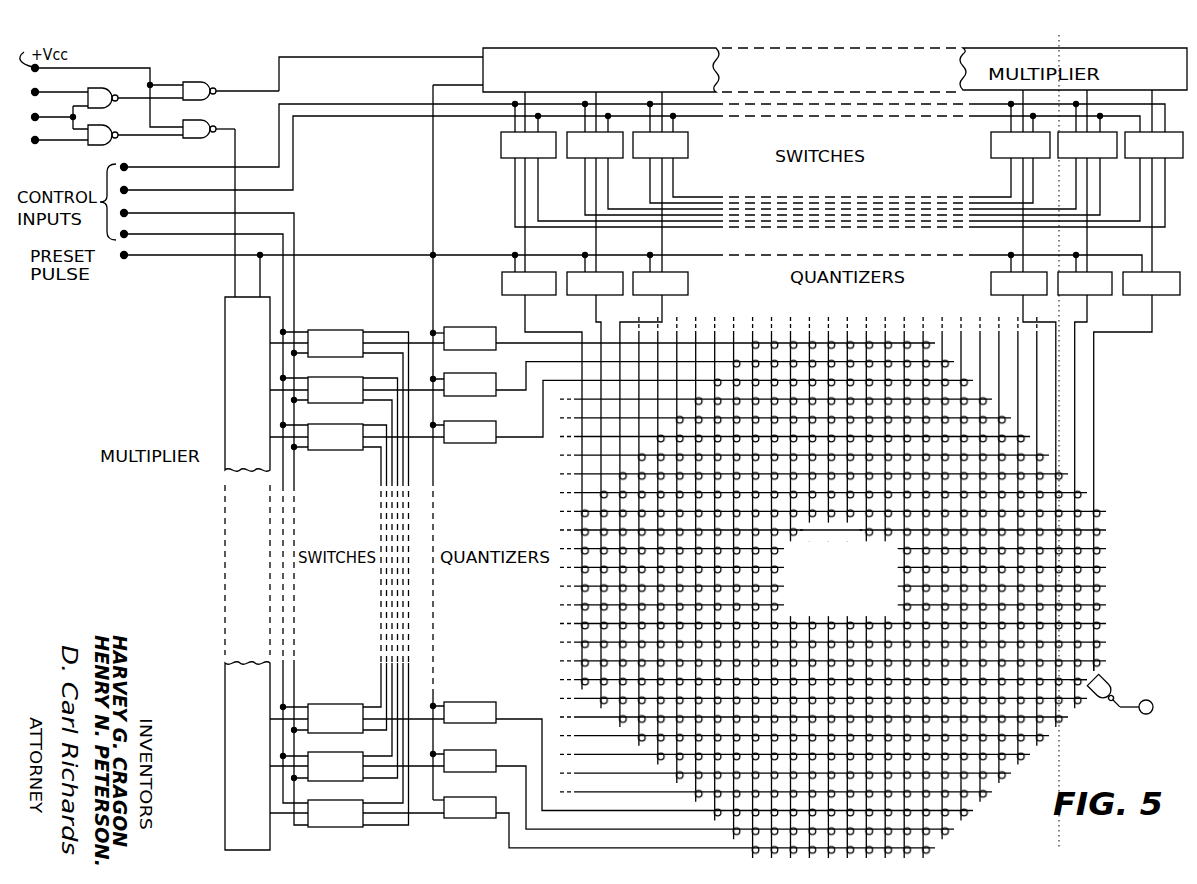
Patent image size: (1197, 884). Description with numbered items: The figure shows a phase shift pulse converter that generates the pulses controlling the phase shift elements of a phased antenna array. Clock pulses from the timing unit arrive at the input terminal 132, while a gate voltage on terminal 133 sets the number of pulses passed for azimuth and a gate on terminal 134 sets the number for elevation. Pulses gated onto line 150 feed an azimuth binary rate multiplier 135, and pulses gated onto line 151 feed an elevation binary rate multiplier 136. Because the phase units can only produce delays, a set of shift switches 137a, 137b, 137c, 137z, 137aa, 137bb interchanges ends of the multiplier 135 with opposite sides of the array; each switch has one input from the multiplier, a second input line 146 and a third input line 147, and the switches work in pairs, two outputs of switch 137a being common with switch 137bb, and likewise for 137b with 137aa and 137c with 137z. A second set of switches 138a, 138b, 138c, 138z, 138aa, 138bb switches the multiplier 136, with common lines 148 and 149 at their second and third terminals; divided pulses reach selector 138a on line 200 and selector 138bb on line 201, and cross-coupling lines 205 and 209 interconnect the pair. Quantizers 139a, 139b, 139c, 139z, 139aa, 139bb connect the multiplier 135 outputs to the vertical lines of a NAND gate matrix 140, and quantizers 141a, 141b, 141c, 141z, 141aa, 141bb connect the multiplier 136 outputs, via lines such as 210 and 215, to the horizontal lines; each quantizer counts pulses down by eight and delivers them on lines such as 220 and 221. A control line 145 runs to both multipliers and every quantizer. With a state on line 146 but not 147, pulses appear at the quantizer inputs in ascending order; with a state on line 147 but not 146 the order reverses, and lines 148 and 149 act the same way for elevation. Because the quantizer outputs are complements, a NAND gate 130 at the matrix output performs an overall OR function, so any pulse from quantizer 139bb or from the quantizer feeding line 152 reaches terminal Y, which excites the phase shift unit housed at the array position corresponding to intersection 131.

The NAND gate 130 is at (1106, 708).
The intersection 131 is at (1095, 677).
The input terminal 132 is at (42, 100).
The terminal 133 is at (46, 80).
The terminal 134 is at (37, 143).
The azimuth binary rate multiplier 135 is at (602, 82).
The elevation binary rate multiplier 136 is at (264, 403).
The shift switch 137a is at (528, 131).
The shift switch 137b is at (595, 131).
The shift switch 137c is at (660, 131).
The shift switch 137z is at (1020, 131).
The shift switch 137aa is at (1087, 131).
The shift switch 137bb is at (1154, 145).
The switch 138a is at (335, 343).
The switch 138b is at (335, 390).
The switch 138c is at (335, 437).
The switch 138z is at (335, 718).
The switch 138aa is at (335, 766).
The switch 138bb is at (335, 813).
The quantizer 139a is at (529, 283).
The quantizer 139b is at (595, 283).
The quantizer 139c is at (660, 283).
The quantizer 139z is at (1019, 283).
The quantizer 139aa is at (1085, 283).
The quantizer 139bb is at (1151, 283).
The NAND gate matrix 140 is at (828, 577).
The quantizer 141a is at (470, 338).
The quantizer 141b is at (470, 384).
The quantizer 141c is at (470, 432).
The quantizer 141z is at (470, 712).
The quantizer 141aa is at (470, 761).
The quantizer 141bb is at (470, 807).
The control line 145 is at (208, 258).
The second input line 146 is at (360, 103).
The third input line 147 is at (358, 118).
The line 148 is at (286, 292).
The line 149 is at (296, 226).
The line 150 is at (333, 58).
The line 151 is at (233, 152).
The line 152 is at (568, 678).
The line 200 is at (270, 341).
The line 201 is at (276, 820).
The line 205 is at (378, 333).
The line 209 is at (373, 806).
The line 210 is at (435, 340).
The line 215 is at (432, 818).
The output line 220 is at (510, 342).
The line 221 is at (578, 846).